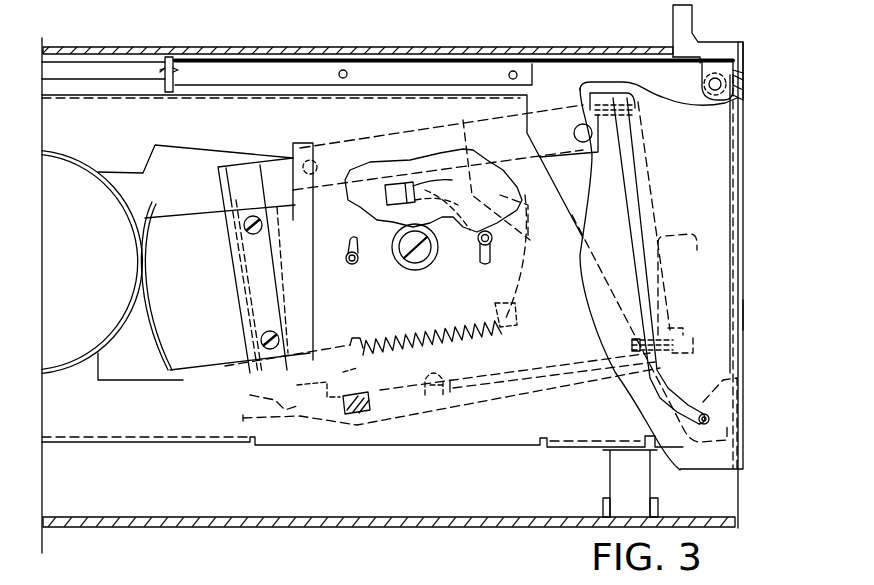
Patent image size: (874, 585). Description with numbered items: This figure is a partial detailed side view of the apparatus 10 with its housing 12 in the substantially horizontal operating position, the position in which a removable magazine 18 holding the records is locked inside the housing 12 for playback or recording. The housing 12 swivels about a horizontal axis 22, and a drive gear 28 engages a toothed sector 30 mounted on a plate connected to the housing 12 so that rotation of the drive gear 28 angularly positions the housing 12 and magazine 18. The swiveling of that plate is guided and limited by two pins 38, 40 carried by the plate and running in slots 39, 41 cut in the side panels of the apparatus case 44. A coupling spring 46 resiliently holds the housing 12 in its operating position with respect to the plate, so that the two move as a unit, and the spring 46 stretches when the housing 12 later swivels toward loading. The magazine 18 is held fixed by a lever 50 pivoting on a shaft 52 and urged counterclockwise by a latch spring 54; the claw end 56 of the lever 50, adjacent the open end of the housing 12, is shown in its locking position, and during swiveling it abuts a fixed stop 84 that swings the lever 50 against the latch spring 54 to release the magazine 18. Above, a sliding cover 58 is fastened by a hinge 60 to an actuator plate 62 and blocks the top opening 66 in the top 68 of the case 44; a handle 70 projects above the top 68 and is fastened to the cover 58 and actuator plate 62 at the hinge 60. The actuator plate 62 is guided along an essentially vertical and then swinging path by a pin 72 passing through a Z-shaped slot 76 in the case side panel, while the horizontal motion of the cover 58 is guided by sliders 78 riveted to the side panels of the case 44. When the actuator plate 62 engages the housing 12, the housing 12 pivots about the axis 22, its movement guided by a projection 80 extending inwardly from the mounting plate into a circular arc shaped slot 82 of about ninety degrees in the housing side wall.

The apparatus 10 is at (465, 537).
The housing 12 is at (293, 333).
The removable magazine 18 is at (677, 284).
The horizontal axis 22 is at (410, 262).
The drive gear 28 is at (60, 355).
The toothed sector 30 is at (190, 226).
The pin 38 is at (350, 264).
The slot 39 is at (352, 246).
The pin 40 is at (505, 252).
The slot 41 is at (505, 262).
The apparatus case 44 is at (742, 312).
The coupling spring 46 is at (494, 341).
The lever 50 is at (485, 390).
The shaft 52 is at (438, 378).
The latch spring 54 is at (350, 382).
The claw end 56 is at (690, 340).
The sliding cover 58 is at (608, 60).
The hinge 60 is at (708, 102).
The actuator plate 62 is at (743, 228).
The top opening 66 is at (212, 48).
The top 68 is at (180, 46).
The handle 70 is at (695, 14).
The pin 72 is at (712, 418).
The Z-shaped slot 76 is at (640, 222).
The slider 78 is at (405, 68).
The projection 80 is at (433, 190).
The circular arc shaped slot 82 is at (514, 204).
The fixed stop 84 is at (547, 438).